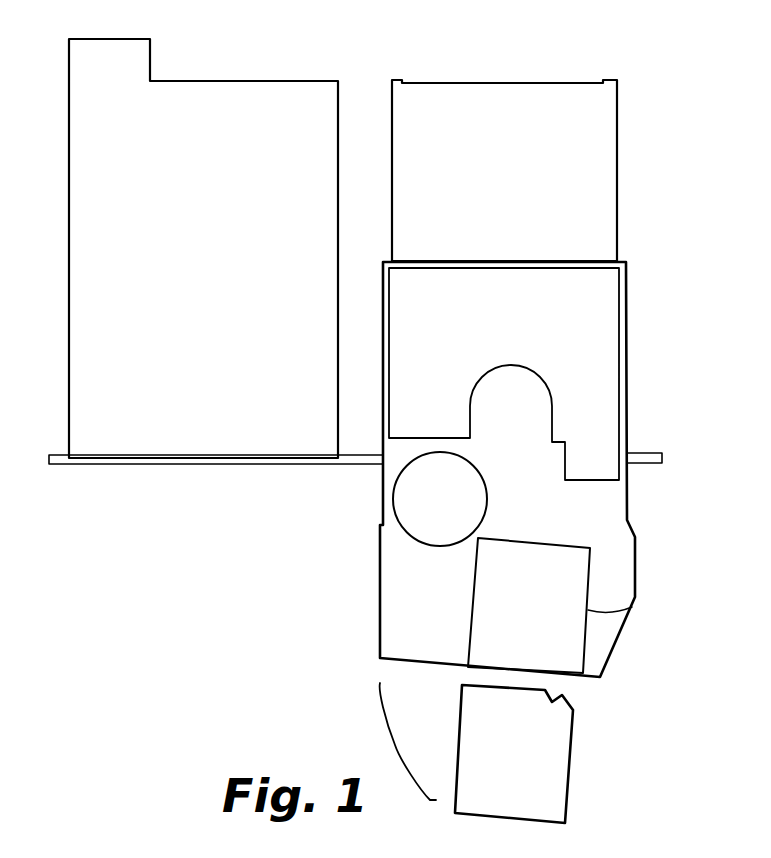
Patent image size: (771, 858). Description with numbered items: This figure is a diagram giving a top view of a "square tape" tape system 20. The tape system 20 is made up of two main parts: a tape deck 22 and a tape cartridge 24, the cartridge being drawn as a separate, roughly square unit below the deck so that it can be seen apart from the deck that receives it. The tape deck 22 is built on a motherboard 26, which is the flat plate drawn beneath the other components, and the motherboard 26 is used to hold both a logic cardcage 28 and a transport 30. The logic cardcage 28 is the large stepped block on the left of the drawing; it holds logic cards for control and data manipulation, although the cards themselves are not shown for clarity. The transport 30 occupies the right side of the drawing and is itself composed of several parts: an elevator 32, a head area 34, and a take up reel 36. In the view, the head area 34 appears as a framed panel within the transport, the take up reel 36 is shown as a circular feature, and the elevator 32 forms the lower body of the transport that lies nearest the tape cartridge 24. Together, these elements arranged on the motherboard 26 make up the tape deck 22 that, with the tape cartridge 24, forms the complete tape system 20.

The tape system 20 is at (162, 714).
The tape deck 22 is at (112, 584).
The tape cartridge 24 is at (572, 753).
The motherboard 26 is at (118, 466).
The logic cardcage 28 is at (233, 81).
The transport 30 is at (523, 83).
The elevator 32 is at (630, 607).
The head area 34 is at (620, 361).
The take up reel 36 is at (407, 535).